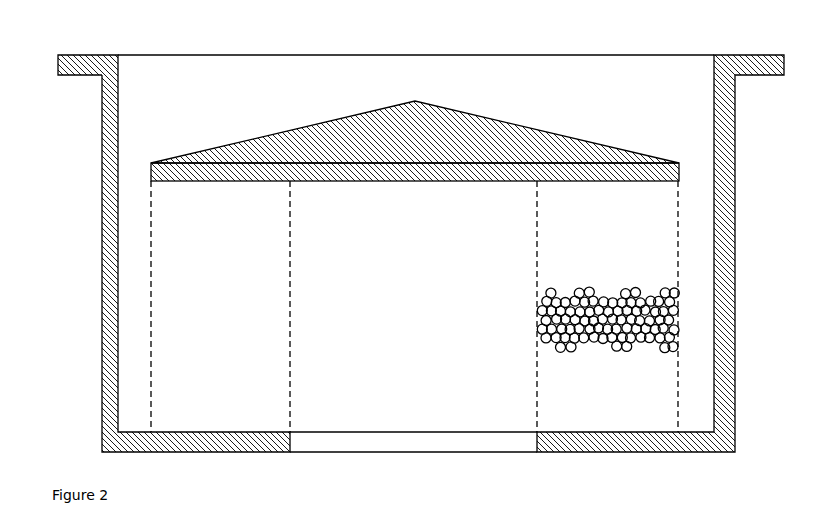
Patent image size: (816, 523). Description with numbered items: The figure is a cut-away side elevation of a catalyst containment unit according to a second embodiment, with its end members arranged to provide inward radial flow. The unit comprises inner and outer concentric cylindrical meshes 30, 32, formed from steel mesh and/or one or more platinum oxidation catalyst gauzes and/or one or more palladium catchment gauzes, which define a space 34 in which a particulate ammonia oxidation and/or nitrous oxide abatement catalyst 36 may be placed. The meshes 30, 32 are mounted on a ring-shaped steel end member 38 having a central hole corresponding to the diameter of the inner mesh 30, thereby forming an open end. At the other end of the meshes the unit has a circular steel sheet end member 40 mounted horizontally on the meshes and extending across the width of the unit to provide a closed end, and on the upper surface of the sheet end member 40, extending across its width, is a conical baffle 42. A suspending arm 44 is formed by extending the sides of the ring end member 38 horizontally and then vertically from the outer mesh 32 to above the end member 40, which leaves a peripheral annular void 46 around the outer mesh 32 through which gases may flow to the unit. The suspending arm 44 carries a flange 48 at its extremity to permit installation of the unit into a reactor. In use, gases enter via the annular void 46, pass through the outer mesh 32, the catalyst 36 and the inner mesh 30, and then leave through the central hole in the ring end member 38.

The inner concentric cylindrical mesh 30 is at (537, 270).
The outer concentric cylindrical mesh 32 is at (678, 253).
The space 34 is at (600, 213).
The particulate ammonia oxidation and/or nitrous oxide abatement catalyst 36 is at (537, 314).
The ring-shaped steel end member 38 is at (664, 452).
The circular steel sheet end member 40 is at (387, 172).
The conical baffle 42 is at (491, 133).
The suspending arm 44 is at (107, 304).
The peripheral annular void 46 is at (132, 241).
The flange 48 is at (80, 60).